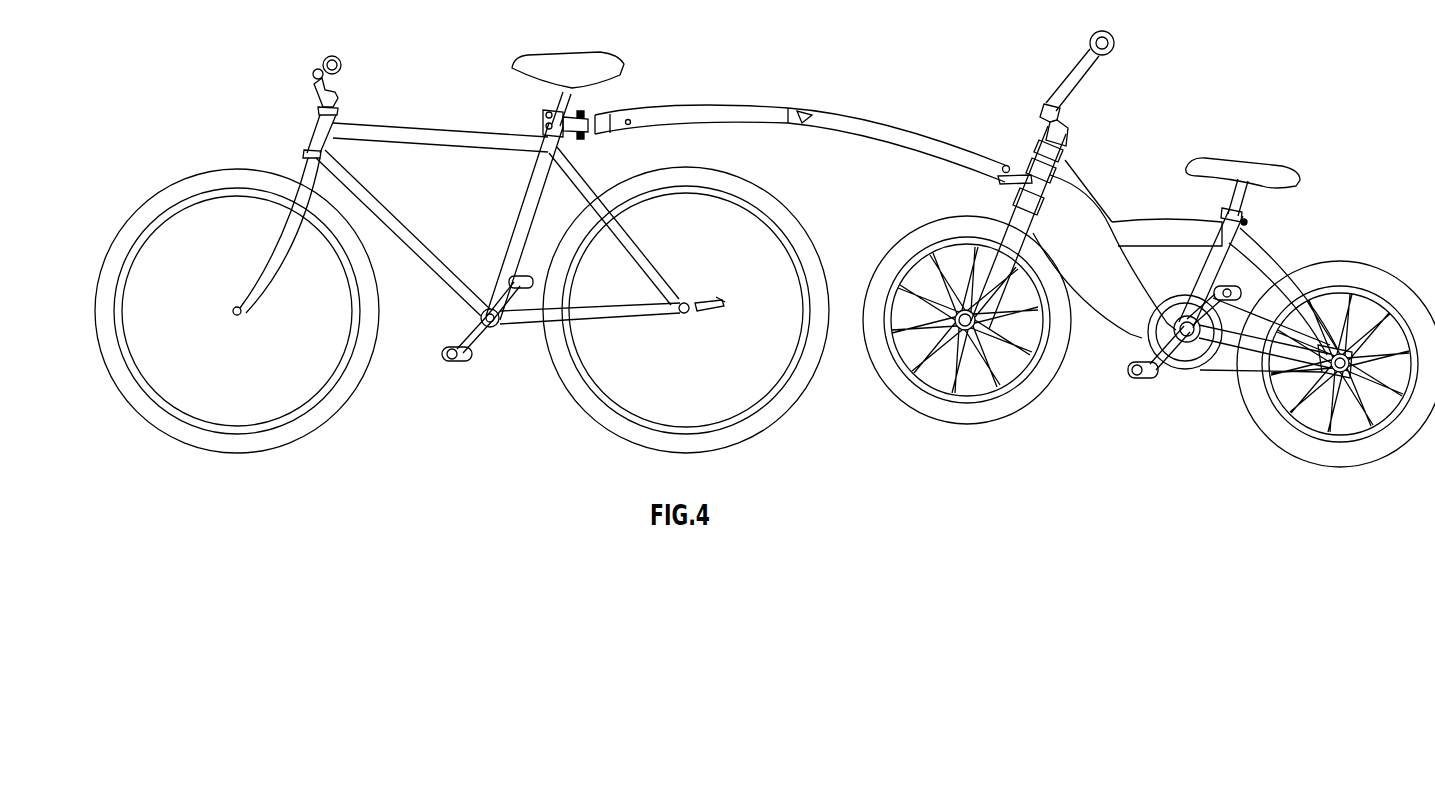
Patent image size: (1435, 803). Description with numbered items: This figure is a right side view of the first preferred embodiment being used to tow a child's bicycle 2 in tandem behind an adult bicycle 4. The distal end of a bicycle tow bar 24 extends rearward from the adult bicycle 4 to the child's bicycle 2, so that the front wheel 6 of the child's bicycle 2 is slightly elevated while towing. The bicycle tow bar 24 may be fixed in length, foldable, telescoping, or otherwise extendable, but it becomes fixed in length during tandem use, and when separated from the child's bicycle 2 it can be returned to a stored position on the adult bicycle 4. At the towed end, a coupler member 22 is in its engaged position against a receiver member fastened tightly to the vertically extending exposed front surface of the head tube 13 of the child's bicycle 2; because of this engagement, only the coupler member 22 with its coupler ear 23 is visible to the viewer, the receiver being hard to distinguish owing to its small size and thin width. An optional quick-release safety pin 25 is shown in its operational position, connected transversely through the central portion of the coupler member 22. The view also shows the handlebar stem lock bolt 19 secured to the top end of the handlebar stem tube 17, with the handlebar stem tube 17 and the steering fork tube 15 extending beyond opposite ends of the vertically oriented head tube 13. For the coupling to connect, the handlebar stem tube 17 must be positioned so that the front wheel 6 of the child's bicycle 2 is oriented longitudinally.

The child's bicycle 2 is at (1267, 257).
The adult bicycle 4 is at (413, 127).
The front wheel 6 is at (897, 393).
The head tube 13 is at (1063, 168).
The steering fork tube 15 is at (1021, 210).
The handlebar stem tube 17 is at (1070, 142).
The handlebar stem lock bolt 19 is at (1075, 123).
The coupler member 22 is at (1031, 162).
The coupler ear 23 is at (998, 178).
The bicycle tow bar 24 is at (910, 130).
The quick-release safety pin 25 is at (1003, 165).